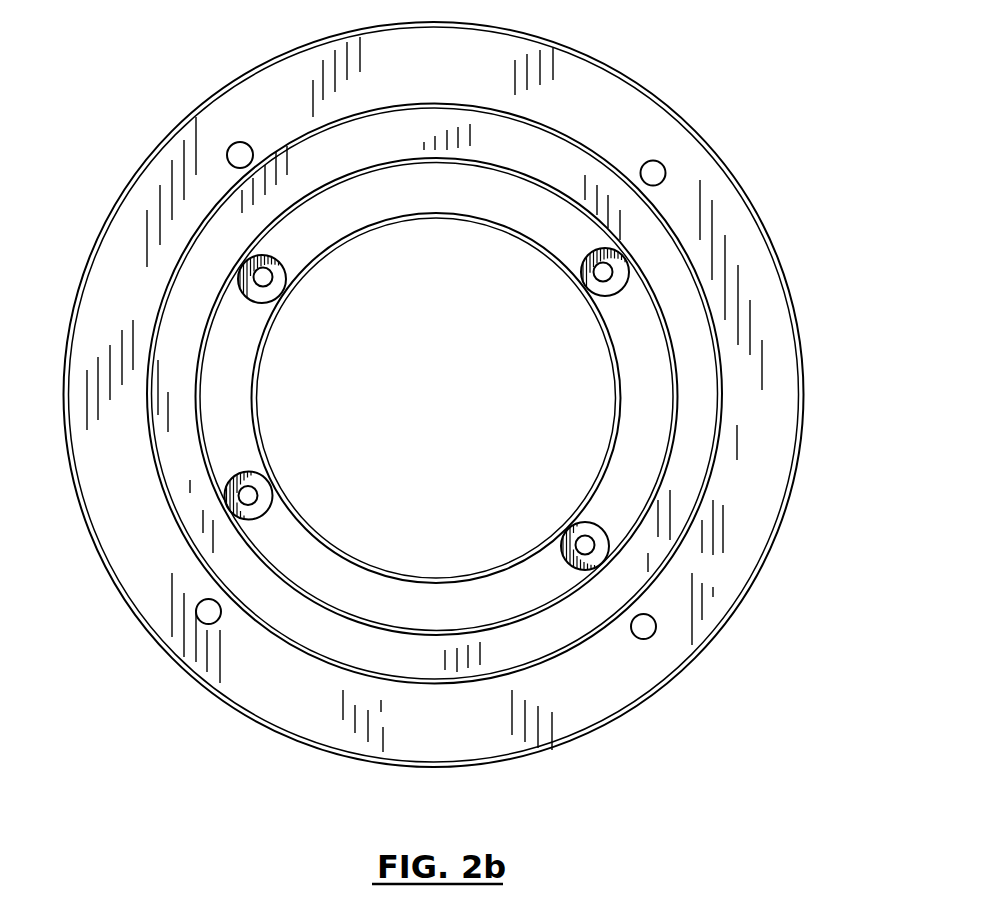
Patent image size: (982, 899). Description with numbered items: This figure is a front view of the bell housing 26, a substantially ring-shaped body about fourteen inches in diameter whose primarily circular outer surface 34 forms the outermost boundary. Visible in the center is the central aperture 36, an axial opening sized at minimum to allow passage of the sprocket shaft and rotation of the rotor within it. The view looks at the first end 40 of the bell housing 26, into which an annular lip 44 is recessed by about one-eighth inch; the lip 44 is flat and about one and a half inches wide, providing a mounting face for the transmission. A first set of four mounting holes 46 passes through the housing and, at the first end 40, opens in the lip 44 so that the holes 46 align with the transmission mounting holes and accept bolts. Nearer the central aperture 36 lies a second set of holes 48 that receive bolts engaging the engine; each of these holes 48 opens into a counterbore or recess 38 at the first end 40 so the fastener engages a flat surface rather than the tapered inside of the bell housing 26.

The bell housing 26 is at (458, 408).
The outer surface 34 is at (800, 333).
The central aperture 36 is at (472, 276).
The recesses 38 is at (603, 545).
The first end 40 is at (770, 457).
The annular lip 44 is at (363, 662).
The first set of mounting holes 46 is at (653, 173).
The second set of holes 48 is at (248, 496).